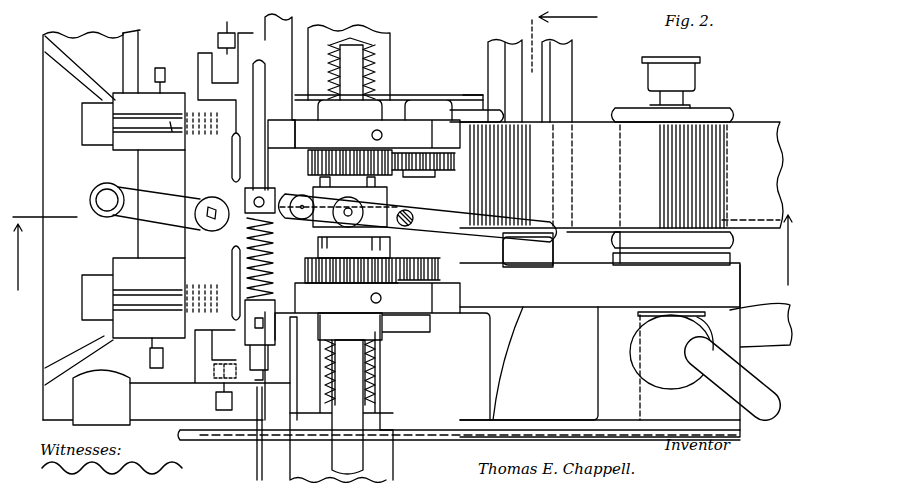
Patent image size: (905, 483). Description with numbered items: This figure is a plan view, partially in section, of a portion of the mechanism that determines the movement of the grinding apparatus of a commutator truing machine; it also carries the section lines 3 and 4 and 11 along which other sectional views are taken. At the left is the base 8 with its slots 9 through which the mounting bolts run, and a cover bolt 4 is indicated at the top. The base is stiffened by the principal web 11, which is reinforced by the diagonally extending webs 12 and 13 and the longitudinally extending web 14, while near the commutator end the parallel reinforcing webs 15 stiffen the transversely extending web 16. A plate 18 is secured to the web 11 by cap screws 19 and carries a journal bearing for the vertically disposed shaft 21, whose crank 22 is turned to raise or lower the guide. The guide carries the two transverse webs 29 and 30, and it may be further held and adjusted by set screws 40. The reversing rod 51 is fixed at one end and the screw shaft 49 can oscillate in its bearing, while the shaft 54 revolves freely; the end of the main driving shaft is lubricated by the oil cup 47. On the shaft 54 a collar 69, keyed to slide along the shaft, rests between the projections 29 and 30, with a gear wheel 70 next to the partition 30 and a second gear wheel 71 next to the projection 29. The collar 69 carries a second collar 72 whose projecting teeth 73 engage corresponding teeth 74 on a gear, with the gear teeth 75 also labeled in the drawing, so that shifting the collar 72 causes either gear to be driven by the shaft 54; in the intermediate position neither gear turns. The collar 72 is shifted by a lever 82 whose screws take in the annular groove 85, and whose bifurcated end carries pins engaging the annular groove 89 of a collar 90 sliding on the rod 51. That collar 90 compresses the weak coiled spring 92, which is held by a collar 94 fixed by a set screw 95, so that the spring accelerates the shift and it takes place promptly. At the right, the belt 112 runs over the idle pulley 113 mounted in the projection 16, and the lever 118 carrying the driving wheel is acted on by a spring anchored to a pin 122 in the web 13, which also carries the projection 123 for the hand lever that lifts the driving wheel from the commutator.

The section line 3— 3 is at (402, 240).
The cover bolt 4 is at (557, 38).
The base 8 is at (572, 55).
The slot 9 is at (530, 77).
The web 11 is at (148, 172).
The diagonally extending web 12 is at (83, 226).
The diagonally extending web 13 is at (79, 358).
The longitudinally extending web 14 is at (139, 62).
The reinforcing web 15 is at (562, 267).
The transversely extending web 16 is at (586, 300).
The plate 18 is at (188, 250).
The cap screw 19 is at (87, 135).
The vertically disposed shaft 21 is at (199, 212).
The crank 22 is at (125, 216).
The transverse web 29 is at (410, 122).
The transverse web 30 is at (415, 310).
The set screw 40 is at (227, 22).
The oil cup 47 is at (671, 82).
The screw shaft 49 is at (333, 457).
The reversing rod 51 is at (253, 68).
The shaft 54 is at (349, 215).
The collar 69 is at (318, 258).
The gear wheel 70 is at (347, 283).
The gear wheel 71 is at (345, 150).
The collar 72 is at (318, 152).
The projecting teeth 73 is at (300, 234).
The teeth 74 is at (281, 155).
The rack 75 is at (320, 178).
The lever 82 is at (528, 251).
The annular groove 85 is at (413, 219).
The annular groove 89 is at (253, 205).
The collar 90 is at (232, 185).
The coiled spring 92 is at (232, 262).
The collar 94 is at (245, 338).
The set screw 95 is at (247, 330).
The belt 112 is at (757, 128).
The idle pulley 113 is at (662, 175).
The lever 118 is at (590, 450).
The pin 122 is at (138, 353).
The projection 123 is at (153, 397).